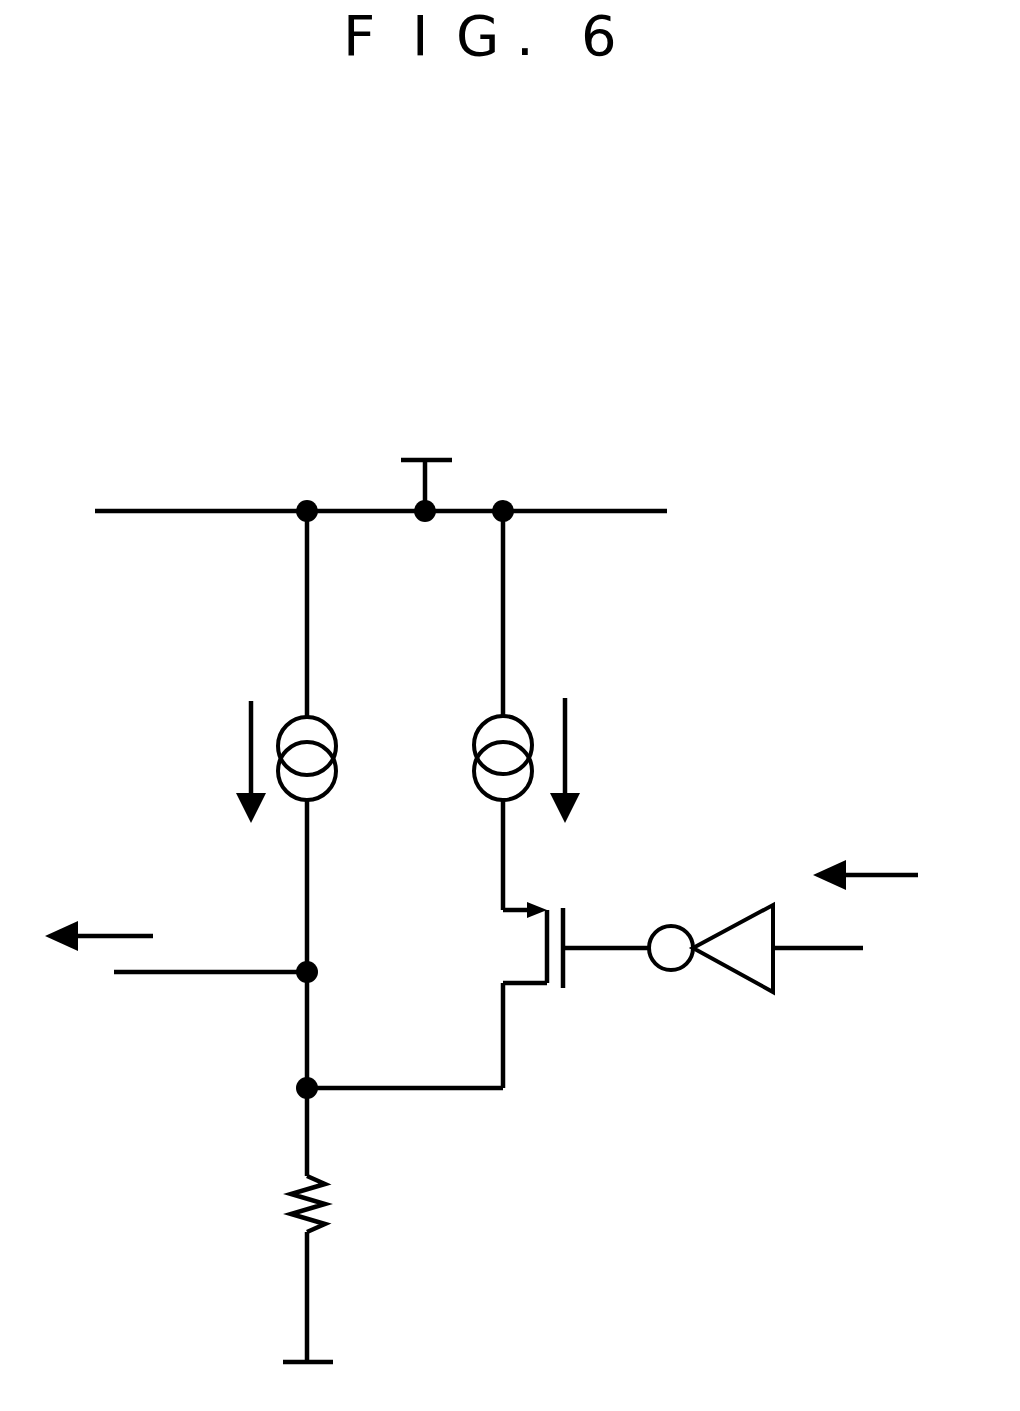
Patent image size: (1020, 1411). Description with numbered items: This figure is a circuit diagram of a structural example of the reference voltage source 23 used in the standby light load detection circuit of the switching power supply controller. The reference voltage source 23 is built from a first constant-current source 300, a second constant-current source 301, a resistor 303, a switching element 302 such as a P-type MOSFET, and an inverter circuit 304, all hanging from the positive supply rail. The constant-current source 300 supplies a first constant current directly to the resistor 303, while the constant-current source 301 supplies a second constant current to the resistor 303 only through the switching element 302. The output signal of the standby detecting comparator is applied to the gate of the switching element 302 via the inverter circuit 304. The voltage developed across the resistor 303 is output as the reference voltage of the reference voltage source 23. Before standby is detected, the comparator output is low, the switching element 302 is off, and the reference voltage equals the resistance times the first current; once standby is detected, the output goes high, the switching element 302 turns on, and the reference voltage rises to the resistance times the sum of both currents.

The reference voltage source 23 is at (778, 495).
The constant-current source 300 is at (327, 718).
The constant-current source 301 is at (492, 718).
The switching element 302 is at (553, 988).
The resistor 303 is at (325, 1205).
The inverter circuit 304 is at (728, 980).